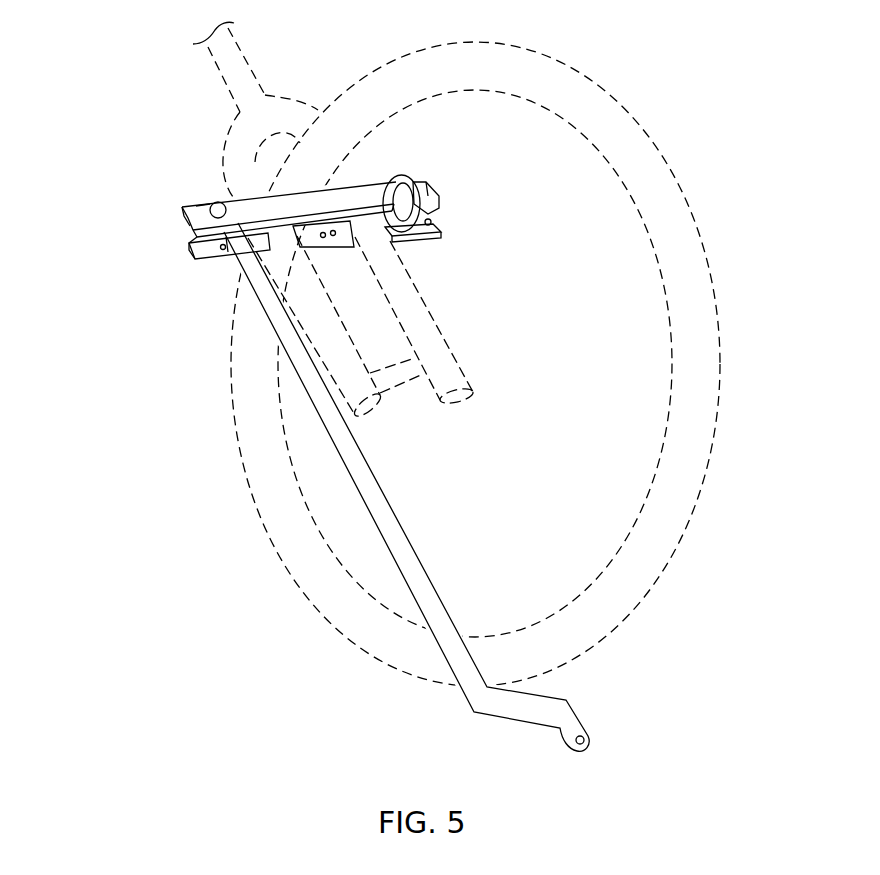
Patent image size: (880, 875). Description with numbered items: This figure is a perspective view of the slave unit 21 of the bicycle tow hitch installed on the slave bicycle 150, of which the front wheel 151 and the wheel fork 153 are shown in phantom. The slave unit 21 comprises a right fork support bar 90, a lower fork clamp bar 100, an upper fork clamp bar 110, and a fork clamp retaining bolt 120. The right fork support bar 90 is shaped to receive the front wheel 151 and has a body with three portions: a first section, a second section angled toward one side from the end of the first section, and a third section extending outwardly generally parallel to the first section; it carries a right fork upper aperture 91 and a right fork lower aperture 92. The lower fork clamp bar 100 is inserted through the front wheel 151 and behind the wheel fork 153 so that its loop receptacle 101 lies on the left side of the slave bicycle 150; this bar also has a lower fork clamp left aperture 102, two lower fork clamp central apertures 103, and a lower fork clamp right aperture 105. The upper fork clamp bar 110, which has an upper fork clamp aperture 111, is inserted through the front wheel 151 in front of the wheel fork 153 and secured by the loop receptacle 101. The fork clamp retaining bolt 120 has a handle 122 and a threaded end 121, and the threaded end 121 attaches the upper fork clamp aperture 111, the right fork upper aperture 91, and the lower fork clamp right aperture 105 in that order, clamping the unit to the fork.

The slave unit 21 is at (219, 212).
The right fork support bar 90 is at (441, 487).
The right fork upper aperture 91 is at (203, 265).
The right fork lower aperture 92 is at (592, 739).
The lower fork clamp bar 100 is at (418, 242).
The loop receptacle 101 is at (404, 177).
The lower fork clamp left aperture 102 is at (440, 220).
The lower fork clamp central apertures 103 is at (333, 238).
The lower fork clamp right aperture 105 is at (226, 254).
The upper fork clamp bar 110 is at (229, 180).
The upper fork clamp aperture 111 is at (183, 211).
The fork clamp retaining bolt 120 is at (214, 205).
The threaded end 121 is at (221, 252).
The handle 122 is at (200, 206).
The slave bicycle 150 is at (706, 88).
The front wheel 151 is at (688, 524).
The wheel fork 153 is at (235, 140).